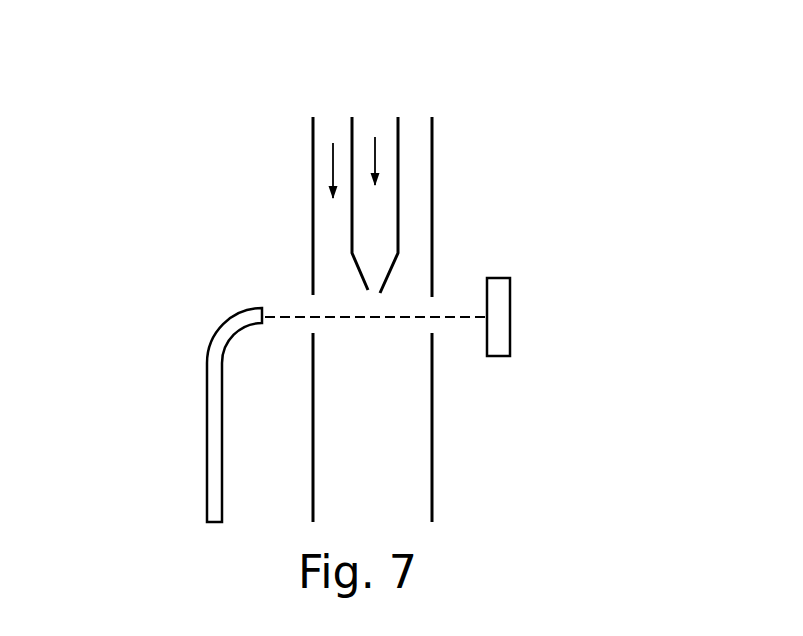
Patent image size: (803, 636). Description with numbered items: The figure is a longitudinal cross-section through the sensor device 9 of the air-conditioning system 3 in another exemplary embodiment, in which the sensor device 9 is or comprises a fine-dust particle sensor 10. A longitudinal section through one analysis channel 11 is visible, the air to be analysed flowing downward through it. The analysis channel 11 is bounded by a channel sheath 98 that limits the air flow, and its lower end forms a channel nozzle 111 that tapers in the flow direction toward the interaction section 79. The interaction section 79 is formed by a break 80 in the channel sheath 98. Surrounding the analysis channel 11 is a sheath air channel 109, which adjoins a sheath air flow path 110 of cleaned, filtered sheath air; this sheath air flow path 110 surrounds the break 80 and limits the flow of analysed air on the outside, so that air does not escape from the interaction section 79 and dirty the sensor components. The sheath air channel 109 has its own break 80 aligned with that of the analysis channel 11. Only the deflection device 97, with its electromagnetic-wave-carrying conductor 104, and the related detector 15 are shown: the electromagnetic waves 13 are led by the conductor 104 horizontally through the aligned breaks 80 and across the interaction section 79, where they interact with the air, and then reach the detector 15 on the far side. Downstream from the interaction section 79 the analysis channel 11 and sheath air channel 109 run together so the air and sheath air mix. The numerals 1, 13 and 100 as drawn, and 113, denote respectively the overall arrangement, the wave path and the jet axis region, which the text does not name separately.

The laser processing apparatus 1 is at (569, 155).
The air-conditioning system 3 is at (191, 98).
The sensor device 9 is at (115, 172).
The fine-dust particle sensor 10 is at (142, 218).
The analysis channel 11 is at (400, 143).
The electromagnetic waves 13 is at (400, 367).
The detector 15 is at (510, 315).
The interaction section 79 is at (311, 308).
The break 80 is at (382, 307).
The deflection device 97 is at (188, 403).
The channel sheath 98 is at (398, 193).
The reference plane 100 is at (458, 318).
The conductor 104 is at (207, 470).
The sheath air channel 109 is at (311, 203).
The sheath air flow path 110 is at (333, 158).
The channel nozzle 111 is at (365, 288).
The jet axis 113 is at (368, 290).